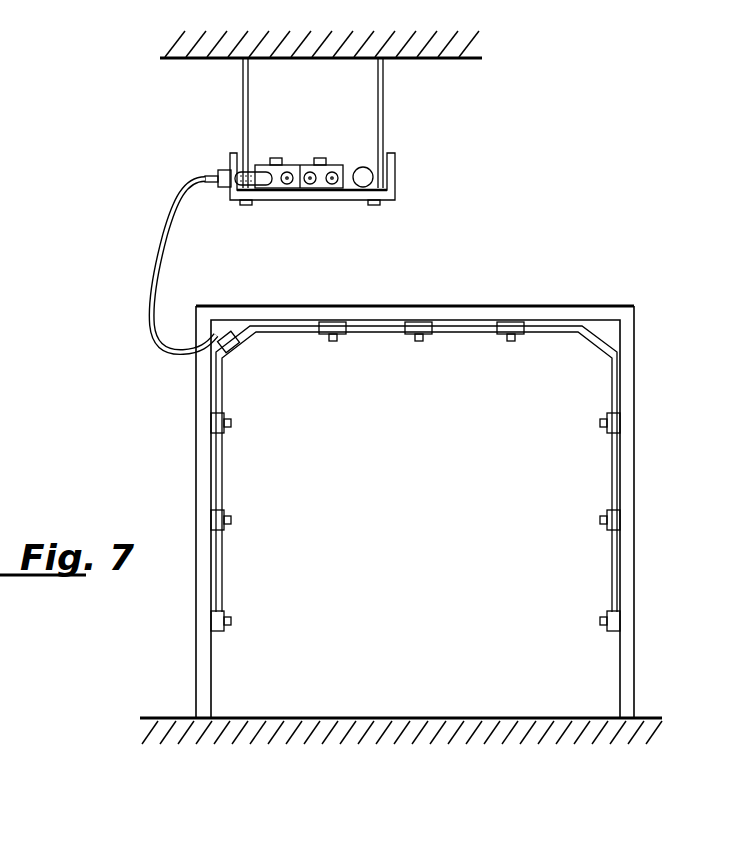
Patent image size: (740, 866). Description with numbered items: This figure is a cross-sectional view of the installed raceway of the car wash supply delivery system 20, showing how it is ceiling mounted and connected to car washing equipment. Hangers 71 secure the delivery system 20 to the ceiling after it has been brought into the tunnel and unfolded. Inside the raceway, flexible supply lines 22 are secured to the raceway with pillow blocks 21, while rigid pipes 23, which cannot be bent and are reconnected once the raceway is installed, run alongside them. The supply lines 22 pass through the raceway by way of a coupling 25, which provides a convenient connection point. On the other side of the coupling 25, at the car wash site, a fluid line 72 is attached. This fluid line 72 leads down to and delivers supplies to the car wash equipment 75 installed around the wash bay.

The car wash supply delivery system 20 is at (444, 199).
The pillow blocks 21 is at (342, 166).
The supply lines 22 is at (287, 185).
The rigid pipes 23 is at (365, 170).
The couplings 25 is at (229, 170).
The hangers 71 is at (243, 90).
The fluid line 72 is at (160, 262).
The car wash equipment 75 is at (325, 338).